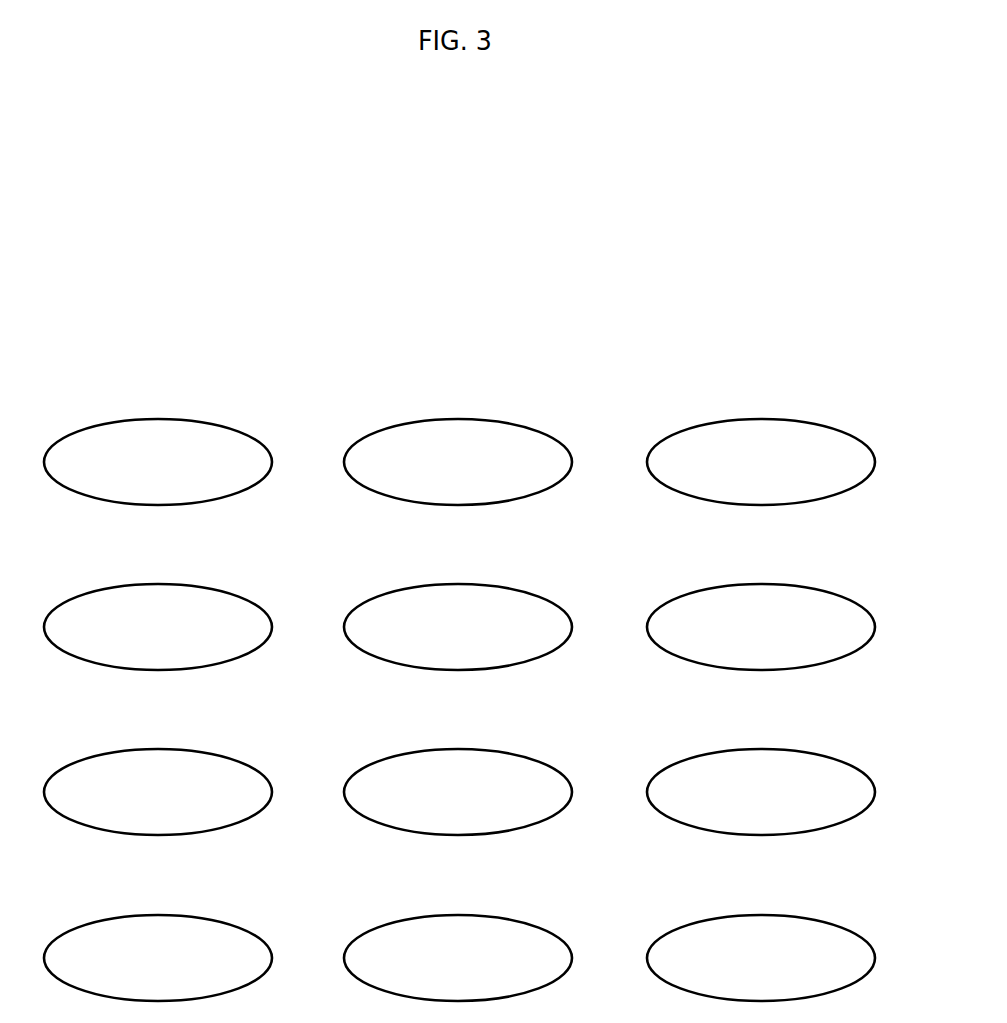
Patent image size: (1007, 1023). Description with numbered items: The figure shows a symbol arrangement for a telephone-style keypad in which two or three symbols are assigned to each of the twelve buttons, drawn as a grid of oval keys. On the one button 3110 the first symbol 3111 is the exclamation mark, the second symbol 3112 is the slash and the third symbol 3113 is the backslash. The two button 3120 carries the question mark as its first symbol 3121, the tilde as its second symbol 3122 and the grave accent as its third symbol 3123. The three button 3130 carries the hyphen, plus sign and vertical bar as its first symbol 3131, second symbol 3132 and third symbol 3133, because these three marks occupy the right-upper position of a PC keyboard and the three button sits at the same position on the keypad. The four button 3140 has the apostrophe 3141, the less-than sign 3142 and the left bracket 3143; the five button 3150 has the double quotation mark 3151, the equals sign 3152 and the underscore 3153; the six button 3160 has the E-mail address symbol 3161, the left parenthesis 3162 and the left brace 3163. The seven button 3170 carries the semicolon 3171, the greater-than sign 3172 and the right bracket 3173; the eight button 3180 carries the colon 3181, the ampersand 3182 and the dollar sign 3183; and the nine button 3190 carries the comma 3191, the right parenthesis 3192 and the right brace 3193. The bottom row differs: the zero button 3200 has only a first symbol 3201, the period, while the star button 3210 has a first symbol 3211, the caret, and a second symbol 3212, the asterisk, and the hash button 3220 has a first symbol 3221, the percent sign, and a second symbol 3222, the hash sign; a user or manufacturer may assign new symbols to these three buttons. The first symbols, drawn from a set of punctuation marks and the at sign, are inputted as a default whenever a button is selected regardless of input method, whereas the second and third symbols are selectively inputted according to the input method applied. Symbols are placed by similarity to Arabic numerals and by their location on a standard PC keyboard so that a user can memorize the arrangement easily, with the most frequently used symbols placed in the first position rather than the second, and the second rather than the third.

The button 1 3110 is at (181, 442).
The first symbol 3111 is at (124, 429).
The second symbol 3112 is at (184, 429).
The third symbol 3113 is at (244, 429).
The button 2 3120 is at (481, 442).
The first symbol 3121 is at (424, 429).
The second symbol 3122 is at (484, 429).
The third symbol 3123 is at (544, 429).
The button 3 3130 is at (784, 442).
The first symbol 3131 is at (727, 429).
The second symbol 3132 is at (787, 429).
The third symbol 3133 is at (845, 429).
The button 4 3140 is at (181, 607).
The first symbol 3141 is at (124, 594).
The second symbol 3142 is at (184, 594).
The third symbol 3143 is at (244, 594).
The button 5 3150 is at (481, 607).
The first symbol 3151 is at (424, 594).
The second symbol 3152 is at (484, 594).
The third symbol 3153 is at (544, 595).
The button 6 3160 is at (784, 607).
The first symbol 3161 is at (727, 594).
The second symbol 3162 is at (787, 594).
The third symbol 3163 is at (844, 594).
The button 7 3170 is at (181, 772).
The first symbol 3171 is at (124, 759).
The second symbol 3172 is at (184, 759).
The third symbol 3173 is at (244, 759).
The button 8 3180 is at (481, 772).
The first symbol 3181 is at (424, 759).
The second symbol 3182 is at (484, 759).
The third symbol 3183 is at (542, 759).
The button 9 3190 is at (784, 772).
The first symbol 3191 is at (727, 759).
The second symbol 3192 is at (787, 759).
The third symbol 3193 is at (843, 759).
The button * 3210 is at (181, 938).
The first symbol 3211 is at (126, 925).
The second symbol 3212 is at (185, 925).
The button 0 3200 is at (481, 938).
The first symbol 3201 is at (424, 925).
The button # 3220 is at (784, 938).
The first symbol 3221 is at (728, 925).
The second symbol 3222 is at (785, 925).